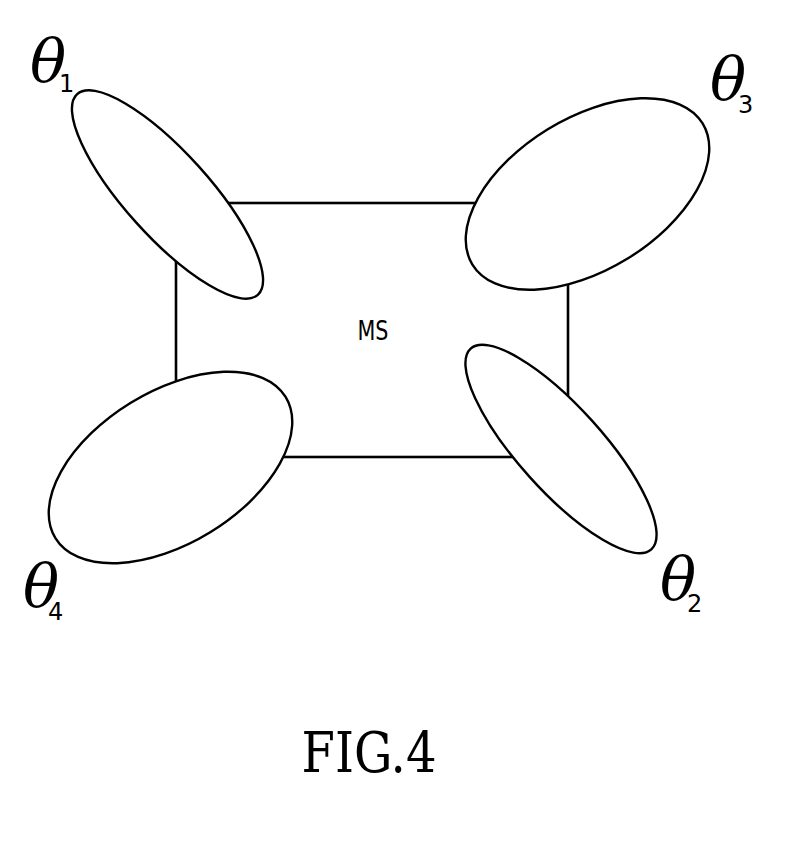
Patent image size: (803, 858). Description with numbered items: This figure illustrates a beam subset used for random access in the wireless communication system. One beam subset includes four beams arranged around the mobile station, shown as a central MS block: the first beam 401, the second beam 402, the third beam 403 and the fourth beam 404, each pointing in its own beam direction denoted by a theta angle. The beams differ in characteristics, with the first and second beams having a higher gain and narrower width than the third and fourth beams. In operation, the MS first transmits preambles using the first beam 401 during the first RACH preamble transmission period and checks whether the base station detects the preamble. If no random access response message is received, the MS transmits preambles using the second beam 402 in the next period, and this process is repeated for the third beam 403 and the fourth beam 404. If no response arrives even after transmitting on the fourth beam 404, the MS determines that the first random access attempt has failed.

The first beam 401 is at (188, 153).
The second beam 402 is at (600, 427).
The third beam 403 is at (522, 153).
The fourth beam 404 is at (130, 408).